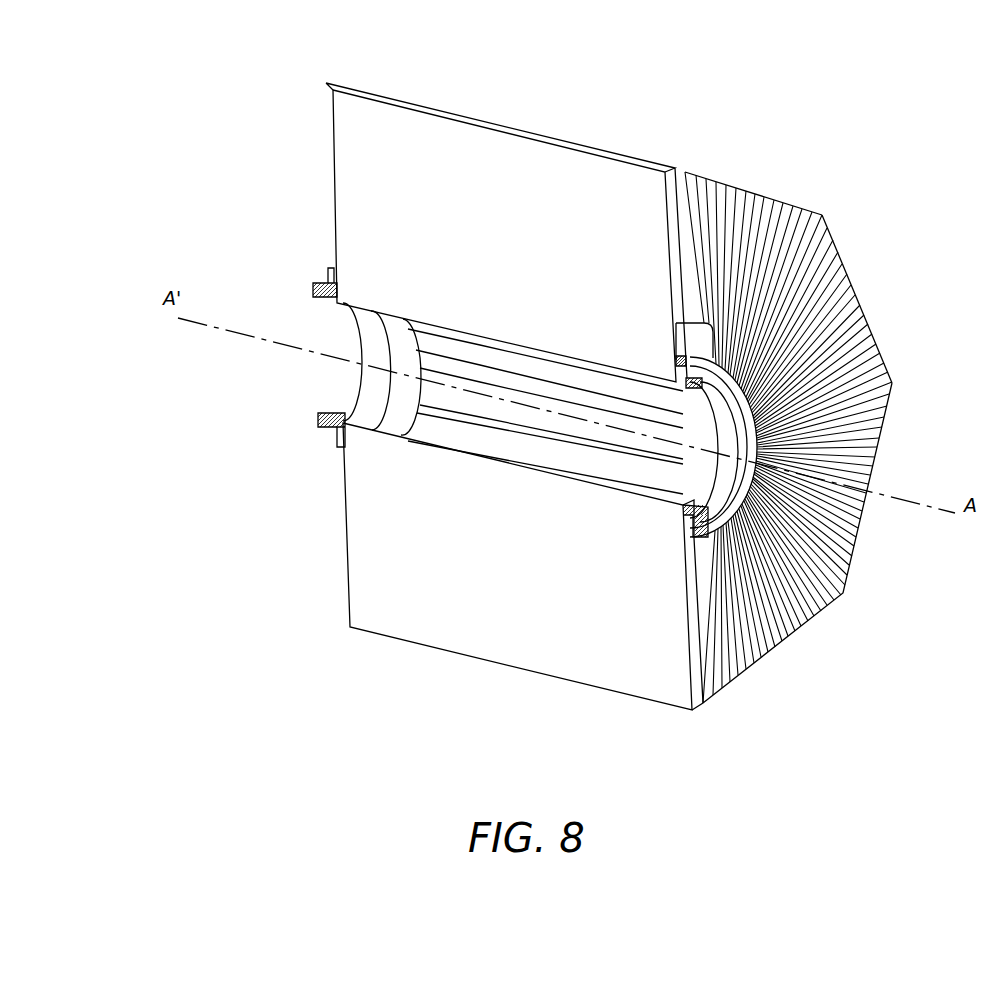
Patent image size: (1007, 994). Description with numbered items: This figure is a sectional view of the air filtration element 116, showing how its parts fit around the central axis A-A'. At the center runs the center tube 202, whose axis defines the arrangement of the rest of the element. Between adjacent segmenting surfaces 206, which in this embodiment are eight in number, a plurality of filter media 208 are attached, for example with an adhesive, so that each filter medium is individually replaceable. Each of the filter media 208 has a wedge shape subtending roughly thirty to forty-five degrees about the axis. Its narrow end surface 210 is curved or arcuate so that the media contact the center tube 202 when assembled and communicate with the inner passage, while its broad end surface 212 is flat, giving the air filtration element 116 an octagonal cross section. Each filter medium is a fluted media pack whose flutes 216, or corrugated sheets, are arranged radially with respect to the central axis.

The air filtration element 116 is at (893, 110).
The center tube 202 is at (336, 391).
The segmenting surfaces 206 is at (531, 262).
The filter media 208 is at (763, 193).
The narrow end surface 210 is at (690, 327).
The broad end surface 212 is at (780, 200).
The flutes 216 is at (725, 195).